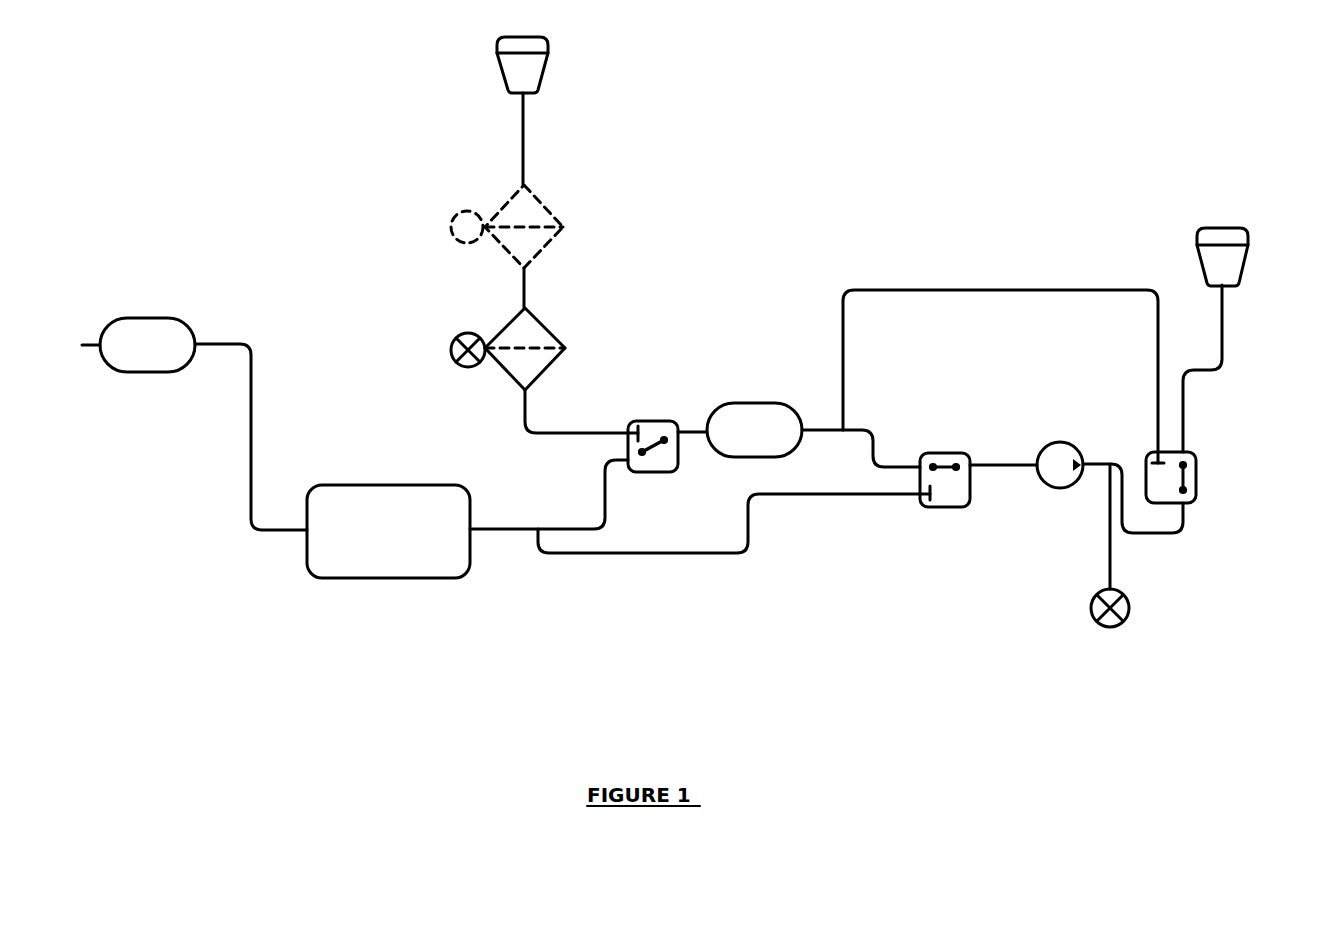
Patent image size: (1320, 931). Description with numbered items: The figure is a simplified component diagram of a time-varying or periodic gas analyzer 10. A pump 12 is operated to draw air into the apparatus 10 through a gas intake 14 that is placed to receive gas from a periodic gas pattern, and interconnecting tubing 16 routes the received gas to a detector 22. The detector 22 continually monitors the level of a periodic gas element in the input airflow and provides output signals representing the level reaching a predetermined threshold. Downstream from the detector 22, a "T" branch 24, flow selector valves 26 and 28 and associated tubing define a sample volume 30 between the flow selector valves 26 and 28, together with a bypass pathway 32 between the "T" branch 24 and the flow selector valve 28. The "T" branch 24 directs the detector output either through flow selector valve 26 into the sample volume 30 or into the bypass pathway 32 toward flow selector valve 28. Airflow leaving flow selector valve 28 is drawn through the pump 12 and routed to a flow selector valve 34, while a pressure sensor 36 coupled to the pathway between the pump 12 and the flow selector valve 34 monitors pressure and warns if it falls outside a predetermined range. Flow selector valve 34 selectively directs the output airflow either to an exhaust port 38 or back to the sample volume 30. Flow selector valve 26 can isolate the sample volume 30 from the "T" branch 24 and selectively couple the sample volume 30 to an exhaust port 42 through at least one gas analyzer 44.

The periodic gas analyzer 10 is at (366, 287).
The pump 12 is at (1060, 438).
The gas intake 14 is at (122, 376).
The interconnecting tubing 16 is at (259, 451).
The detector 22 is at (388, 531).
The "T" branch 24 is at (533, 540).
The flow selector valve 26 is at (655, 418).
The flow selector valve 28 is at (933, 509).
The sample volume 30 is at (743, 401).
The bypass pathway 32 is at (707, 558).
The flow selector valve 34 is at (1199, 509).
The pressure sensor 36 is at (1091, 611).
The exhaust port 38 is at (1221, 226).
The exhaust port 42 is at (555, 53).
The gas analyzer 44 is at (507, 201).